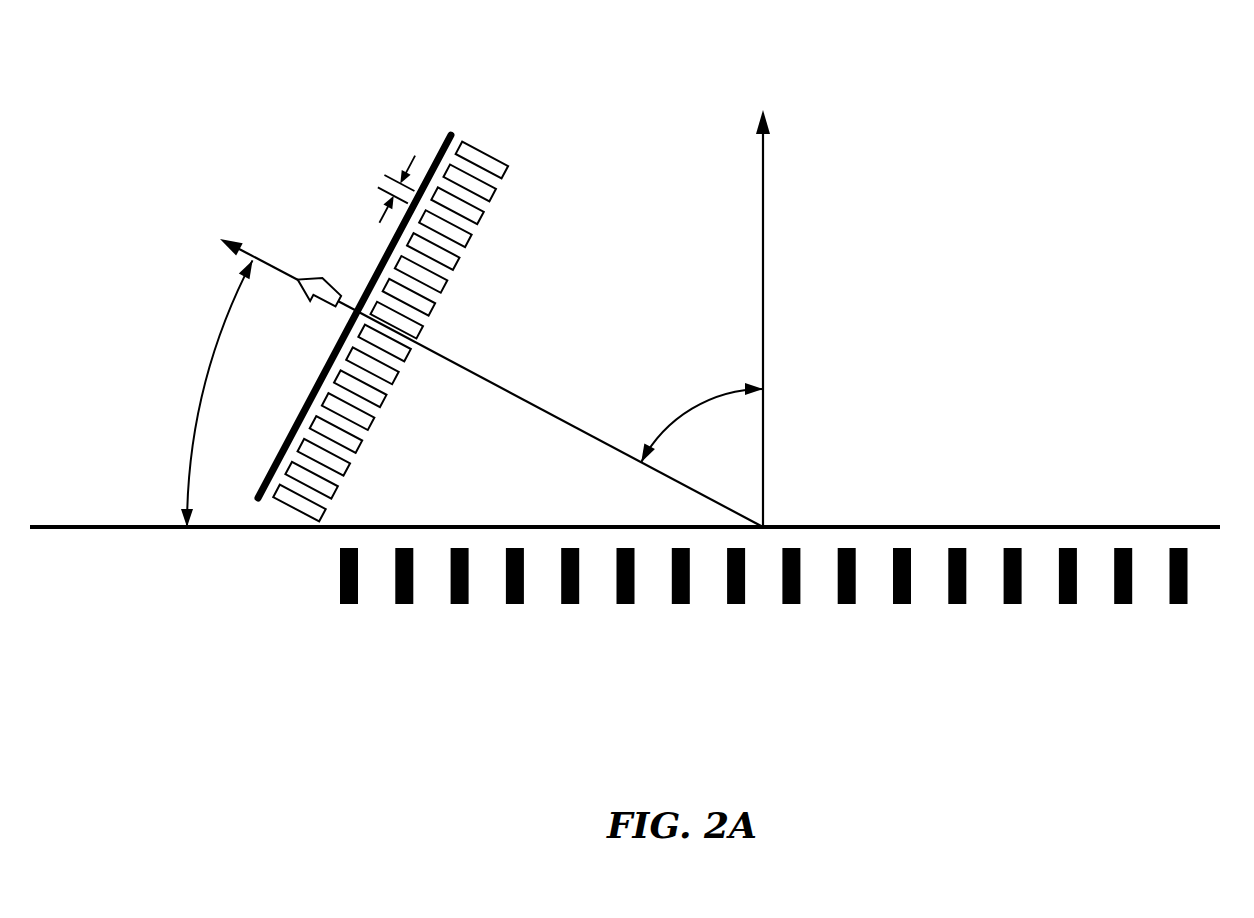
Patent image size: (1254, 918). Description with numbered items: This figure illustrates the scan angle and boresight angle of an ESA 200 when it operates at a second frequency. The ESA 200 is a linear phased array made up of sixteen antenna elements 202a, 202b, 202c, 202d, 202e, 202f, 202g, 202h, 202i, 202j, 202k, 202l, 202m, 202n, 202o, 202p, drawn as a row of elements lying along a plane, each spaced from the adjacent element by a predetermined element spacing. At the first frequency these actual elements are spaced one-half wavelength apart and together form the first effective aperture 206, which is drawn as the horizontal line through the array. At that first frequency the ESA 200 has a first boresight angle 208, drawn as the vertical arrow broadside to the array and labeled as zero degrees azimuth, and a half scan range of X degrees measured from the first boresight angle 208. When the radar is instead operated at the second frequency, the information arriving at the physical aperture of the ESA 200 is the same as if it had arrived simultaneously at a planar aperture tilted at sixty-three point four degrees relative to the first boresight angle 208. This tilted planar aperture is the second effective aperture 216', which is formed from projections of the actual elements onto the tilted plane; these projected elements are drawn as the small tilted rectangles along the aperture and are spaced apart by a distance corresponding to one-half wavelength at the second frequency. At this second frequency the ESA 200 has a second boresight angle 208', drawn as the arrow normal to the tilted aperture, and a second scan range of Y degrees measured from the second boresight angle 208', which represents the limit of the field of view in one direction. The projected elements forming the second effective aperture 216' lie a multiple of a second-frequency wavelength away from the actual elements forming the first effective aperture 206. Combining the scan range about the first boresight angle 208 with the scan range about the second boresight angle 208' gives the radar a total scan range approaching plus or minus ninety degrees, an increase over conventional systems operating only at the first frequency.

The ESA 200 is at (168, 110).
The antenna element 202a is at (349, 641).
The antenna element 202b is at (406, 604).
The antenna element 202c is at (462, 604).
The antenna element 202d is at (517, 604).
The antenna element 202e is at (572, 604).
The antenna element 202f is at (628, 604).
The antenna element 202g is at (683, 604).
The antenna element 202h is at (738, 604).
The antenna element 202i is at (793, 604).
The antenna element 202j is at (849, 604).
The antenna element 202k is at (904, 604).
The antenna element 202l is at (959, 604).
The antenna element 202m is at (1015, 604).
The antenna element 202n is at (1070, 604).
The antenna element 202o is at (1125, 604).
The antenna element 202p is at (1178, 621).
The first effective aperture 206 is at (1173, 526).
The first boresight angle 208 is at (796, 294).
The second boresight angle 208' is at (287, 247).
The second effective aperture 216' is at (374, 279).